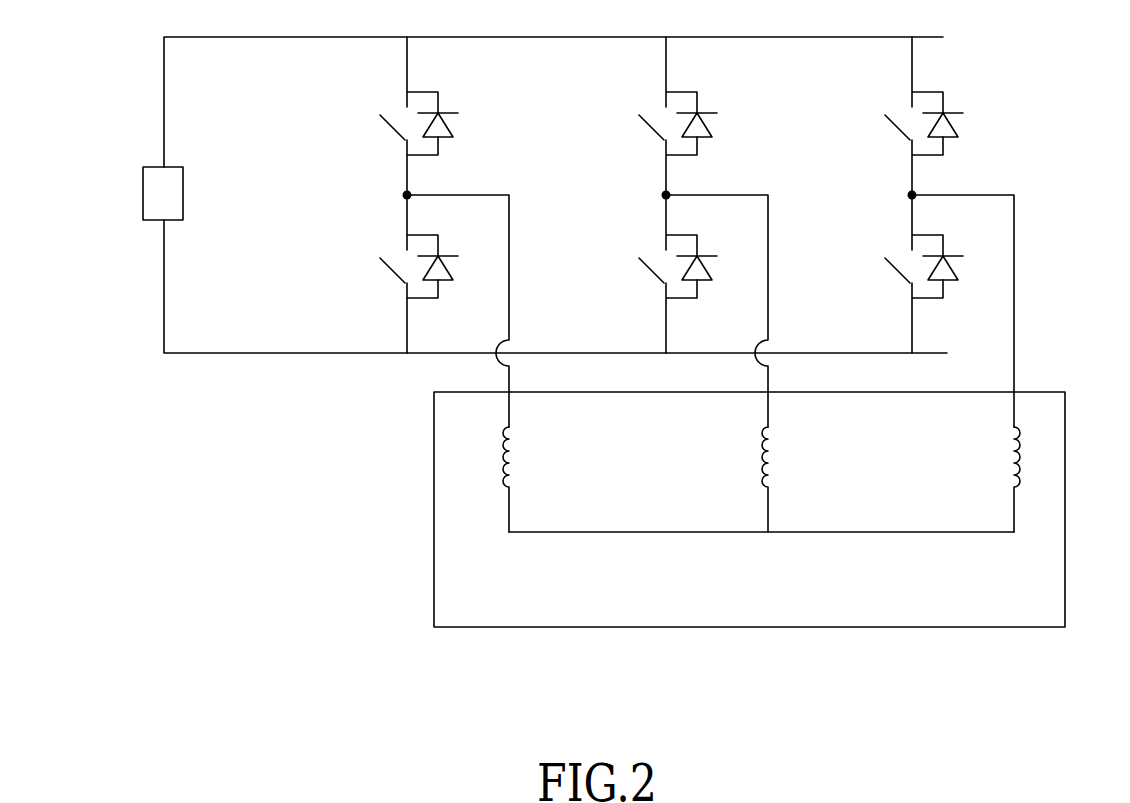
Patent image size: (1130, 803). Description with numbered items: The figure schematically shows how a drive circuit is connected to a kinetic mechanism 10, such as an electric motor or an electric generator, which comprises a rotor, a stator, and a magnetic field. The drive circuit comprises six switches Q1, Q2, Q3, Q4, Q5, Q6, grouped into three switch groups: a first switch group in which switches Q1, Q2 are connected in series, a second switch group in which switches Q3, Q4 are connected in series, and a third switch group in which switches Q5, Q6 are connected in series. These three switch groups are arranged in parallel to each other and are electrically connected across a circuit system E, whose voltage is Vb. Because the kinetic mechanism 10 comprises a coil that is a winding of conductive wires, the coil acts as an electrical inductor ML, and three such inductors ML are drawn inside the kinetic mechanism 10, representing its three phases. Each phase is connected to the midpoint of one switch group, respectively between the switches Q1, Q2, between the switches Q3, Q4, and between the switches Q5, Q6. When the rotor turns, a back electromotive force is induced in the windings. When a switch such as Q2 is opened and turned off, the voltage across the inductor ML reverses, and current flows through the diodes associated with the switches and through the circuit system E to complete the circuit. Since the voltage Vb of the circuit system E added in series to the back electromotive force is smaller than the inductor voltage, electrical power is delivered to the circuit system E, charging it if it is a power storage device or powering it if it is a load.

The circuit system E is at (136, 163).
The voltage of the circuit system Vb is at (141, 193).
The switch Q1 is at (398, 116).
The switch Q2 is at (398, 274).
The switch Q3 is at (659, 116).
The switch Q4 is at (659, 274).
The switch Q5 is at (905, 116).
The switch Q6 is at (905, 274).
The electrical inductor ML is at (761, 479).
The kinetic mechanism 10 is at (462, 494).